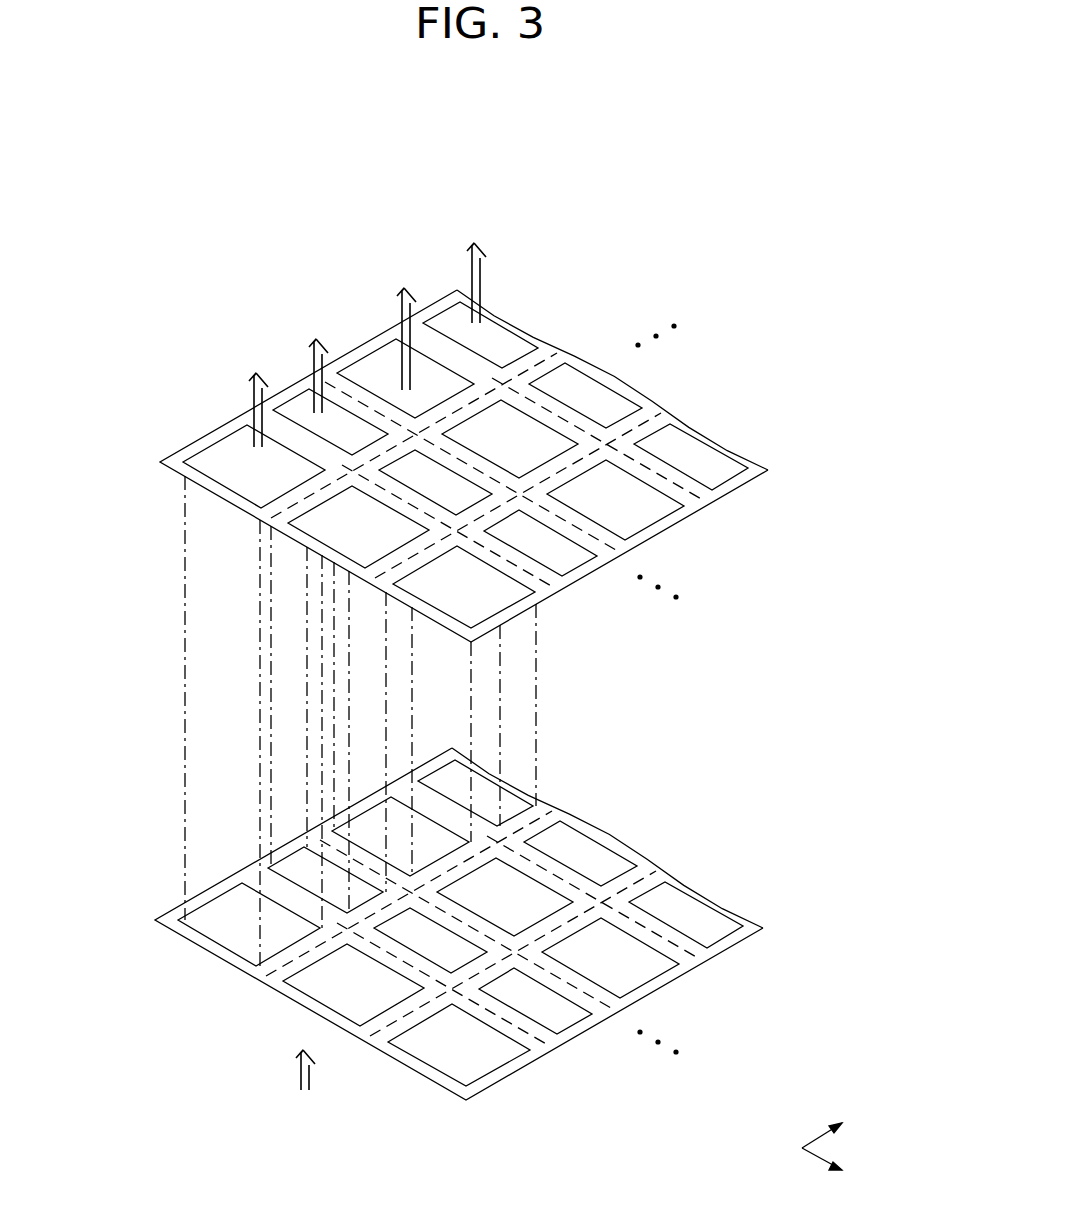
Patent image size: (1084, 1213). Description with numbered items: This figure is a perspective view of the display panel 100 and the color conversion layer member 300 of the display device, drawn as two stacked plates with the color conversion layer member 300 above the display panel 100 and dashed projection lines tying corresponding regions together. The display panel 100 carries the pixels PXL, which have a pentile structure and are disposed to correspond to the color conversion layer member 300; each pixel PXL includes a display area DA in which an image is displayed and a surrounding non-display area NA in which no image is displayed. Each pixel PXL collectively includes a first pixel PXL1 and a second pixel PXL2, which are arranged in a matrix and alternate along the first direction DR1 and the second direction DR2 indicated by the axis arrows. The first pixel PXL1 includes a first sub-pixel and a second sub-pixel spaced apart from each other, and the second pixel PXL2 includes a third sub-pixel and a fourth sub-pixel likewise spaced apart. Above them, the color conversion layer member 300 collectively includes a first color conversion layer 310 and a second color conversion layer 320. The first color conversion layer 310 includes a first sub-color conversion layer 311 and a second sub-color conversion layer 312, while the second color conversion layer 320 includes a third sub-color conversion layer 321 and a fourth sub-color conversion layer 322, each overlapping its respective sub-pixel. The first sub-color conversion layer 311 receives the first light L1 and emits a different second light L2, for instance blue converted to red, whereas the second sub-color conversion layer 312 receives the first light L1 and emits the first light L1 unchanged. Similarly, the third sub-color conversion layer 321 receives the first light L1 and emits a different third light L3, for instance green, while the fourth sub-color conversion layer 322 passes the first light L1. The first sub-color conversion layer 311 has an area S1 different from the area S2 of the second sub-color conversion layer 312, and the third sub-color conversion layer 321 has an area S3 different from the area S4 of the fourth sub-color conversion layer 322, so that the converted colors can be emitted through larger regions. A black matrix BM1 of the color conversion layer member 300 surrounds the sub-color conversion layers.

The color conversion layer member 300 is at (333, 171).
The first color conversion layer 310 is at (250, 274).
The first sub-color conversion layer 311 is at (226, 445).
The second sub-color conversion layer 312 is at (293, 408).
The second color conversion layer 320 is at (434, 169).
The third sub-color conversion layer 321 is at (367, 352).
The fourth sub-color conversion layer 322 is at (447, 305).
The black matrix BM1 is at (182, 450).
The area of first sub-color conversion layer S1 is at (265, 477).
The area of second sub-color conversion layer S2 is at (318, 434).
The area of third sub-color conversion layer S3 is at (417, 391).
The area of fourth sub-color conversion layer S4 is at (469, 345).
The first light L1 is at (391, 655).
The second light L2 is at (258, 396).
The third light L3 is at (407, 325).
The display panel 100 is at (652, 788).
The non-display area NA is at (172, 913).
The display area DA is at (237, 934).
The pixel PXL is at (324, 634).
The first pixel PXL1 is at (254, 728).
The second pixel PXL2 is at (416, 634).
The first direction DR1 is at (835, 1123).
The second direction DR2 is at (839, 1167).